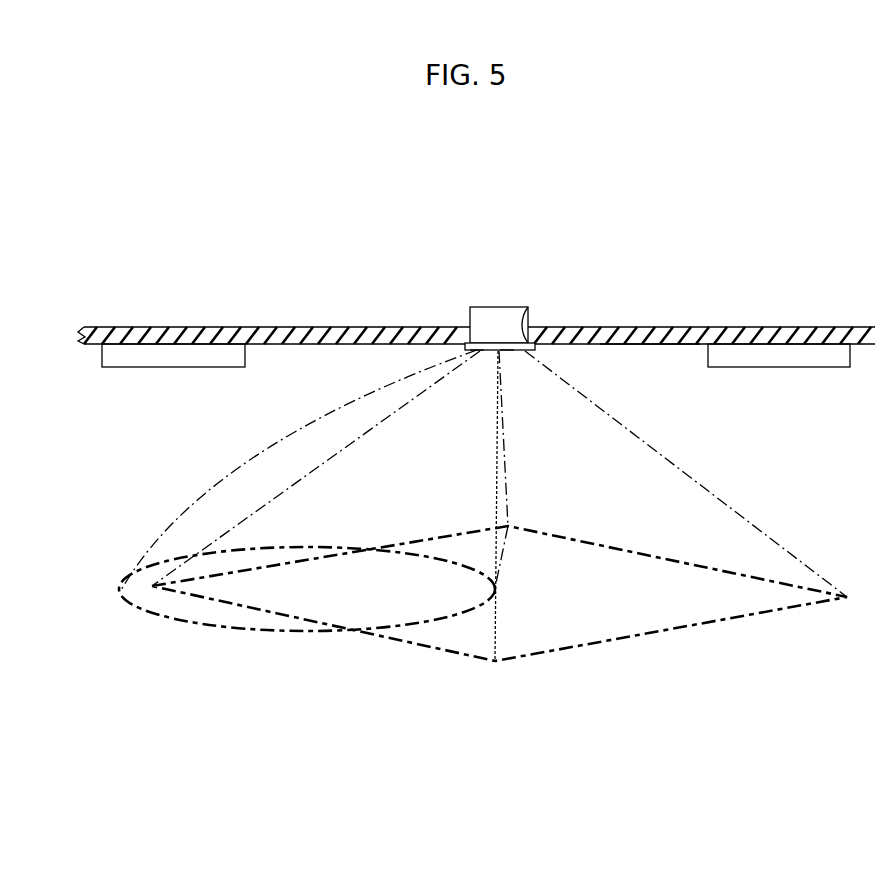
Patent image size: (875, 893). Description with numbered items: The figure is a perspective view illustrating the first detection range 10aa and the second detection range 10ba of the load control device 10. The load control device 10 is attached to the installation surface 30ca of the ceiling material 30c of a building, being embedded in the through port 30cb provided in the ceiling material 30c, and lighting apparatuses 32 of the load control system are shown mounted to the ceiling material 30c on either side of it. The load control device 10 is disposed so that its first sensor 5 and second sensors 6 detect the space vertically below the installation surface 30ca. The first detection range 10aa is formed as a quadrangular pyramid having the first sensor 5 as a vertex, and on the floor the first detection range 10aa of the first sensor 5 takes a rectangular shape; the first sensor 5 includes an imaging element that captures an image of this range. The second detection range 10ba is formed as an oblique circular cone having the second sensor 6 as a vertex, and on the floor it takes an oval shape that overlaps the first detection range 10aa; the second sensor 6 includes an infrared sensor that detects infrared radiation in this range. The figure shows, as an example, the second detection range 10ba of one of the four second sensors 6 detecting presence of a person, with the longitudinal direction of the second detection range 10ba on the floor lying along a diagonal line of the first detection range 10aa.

The load control device 10 is at (472, 307).
The through port 30cb is at (524, 312).
The ceiling material 30c is at (658, 333).
The installation surface 30ca is at (635, 345).
The lighting apparatus 32 is at (158, 360).
The second sensor 6 is at (477, 354).
The first sensor 5 is at (507, 354).
The first detection range 10aa is at (637, 635).
The second detection range 10ba is at (217, 630).